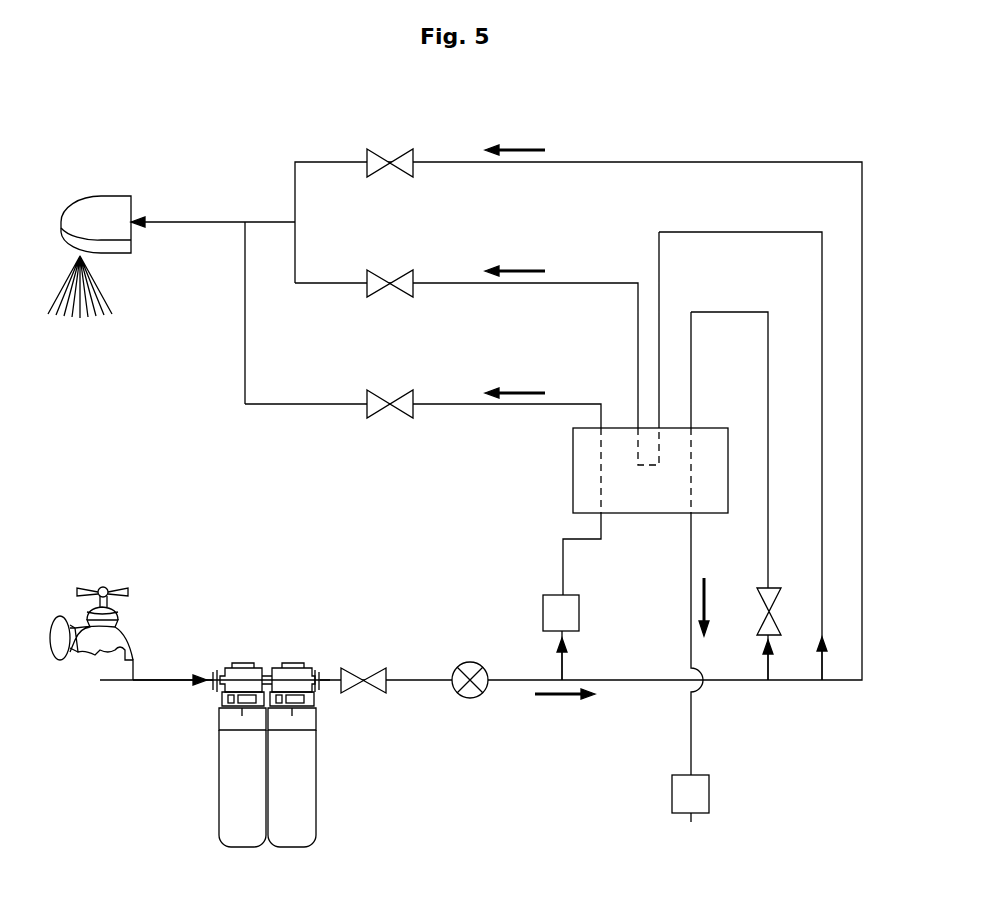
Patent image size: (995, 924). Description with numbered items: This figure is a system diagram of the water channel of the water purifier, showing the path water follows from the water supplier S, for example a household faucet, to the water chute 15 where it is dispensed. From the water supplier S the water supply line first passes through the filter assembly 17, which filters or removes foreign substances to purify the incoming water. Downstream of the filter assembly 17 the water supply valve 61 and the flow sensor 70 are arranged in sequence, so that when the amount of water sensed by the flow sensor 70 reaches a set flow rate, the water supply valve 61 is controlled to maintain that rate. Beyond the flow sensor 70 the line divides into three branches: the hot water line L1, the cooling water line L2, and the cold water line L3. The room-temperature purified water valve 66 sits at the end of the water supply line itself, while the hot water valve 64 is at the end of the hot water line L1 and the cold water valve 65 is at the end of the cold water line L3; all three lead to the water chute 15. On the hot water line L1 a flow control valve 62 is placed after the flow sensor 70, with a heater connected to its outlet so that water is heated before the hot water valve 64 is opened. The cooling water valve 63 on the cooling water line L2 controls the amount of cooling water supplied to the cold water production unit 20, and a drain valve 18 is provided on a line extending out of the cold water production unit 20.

The water chute 15 is at (103, 200).
The purified water valve 66 is at (397, 150).
The cold water valve 65 is at (397, 271).
The hot water valve 64 is at (395, 392).
The cold water production unit 20 is at (715, 428).
The flow control valve 62 is at (543, 612).
The cooling water valve 63 is at (778, 601).
The drain valve 18 is at (710, 793).
The flow sensor 70 is at (470, 662).
The water supply valve 61 is at (357, 672).
The filter assembly 17 is at (243, 667).
The water supplier S is at (100, 655).
The hot water line L1 is at (560, 665).
The cooling water line L2 is at (768, 680).
The cold water line L3 is at (822, 680).